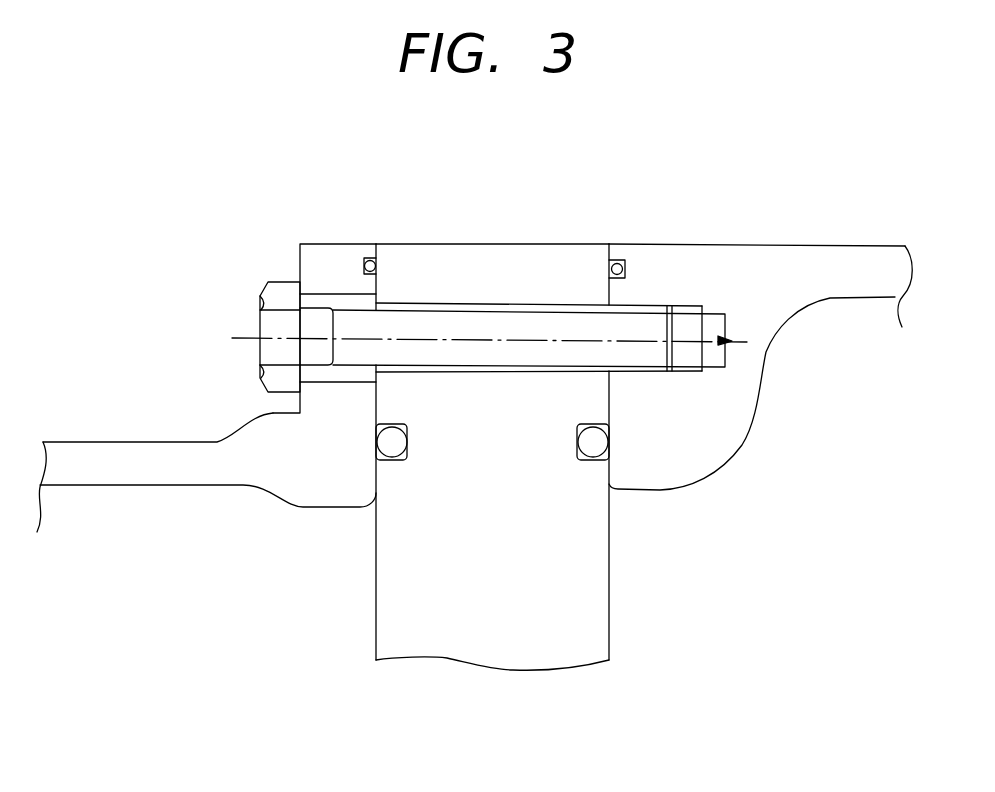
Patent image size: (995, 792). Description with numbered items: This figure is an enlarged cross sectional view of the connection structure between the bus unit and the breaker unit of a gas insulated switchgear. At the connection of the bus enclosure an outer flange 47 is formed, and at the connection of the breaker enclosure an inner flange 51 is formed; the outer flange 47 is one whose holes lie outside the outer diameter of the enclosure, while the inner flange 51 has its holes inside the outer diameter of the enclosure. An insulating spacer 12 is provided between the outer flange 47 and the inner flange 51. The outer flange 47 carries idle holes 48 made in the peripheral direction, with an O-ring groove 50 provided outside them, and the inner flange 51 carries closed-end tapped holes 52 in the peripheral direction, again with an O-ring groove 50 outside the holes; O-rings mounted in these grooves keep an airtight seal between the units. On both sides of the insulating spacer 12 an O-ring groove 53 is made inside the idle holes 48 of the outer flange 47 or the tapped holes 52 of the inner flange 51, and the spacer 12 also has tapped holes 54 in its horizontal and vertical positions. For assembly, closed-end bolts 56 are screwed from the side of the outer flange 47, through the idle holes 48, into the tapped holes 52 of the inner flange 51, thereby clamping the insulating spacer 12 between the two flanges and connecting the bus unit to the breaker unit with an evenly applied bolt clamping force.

The insulating spacer 12 is at (518, 655).
The outer flange 47 is at (266, 480).
The idle holes 48 is at (343, 294).
The O-ring groove 50 is at (608, 246).
The inner flange 51 is at (677, 473).
The tapped holes 52 is at (680, 310).
The O-ring groove 53 is at (407, 462).
The tapped holes 54 is at (572, 304).
The closed-end bolts 56 is at (259, 312).